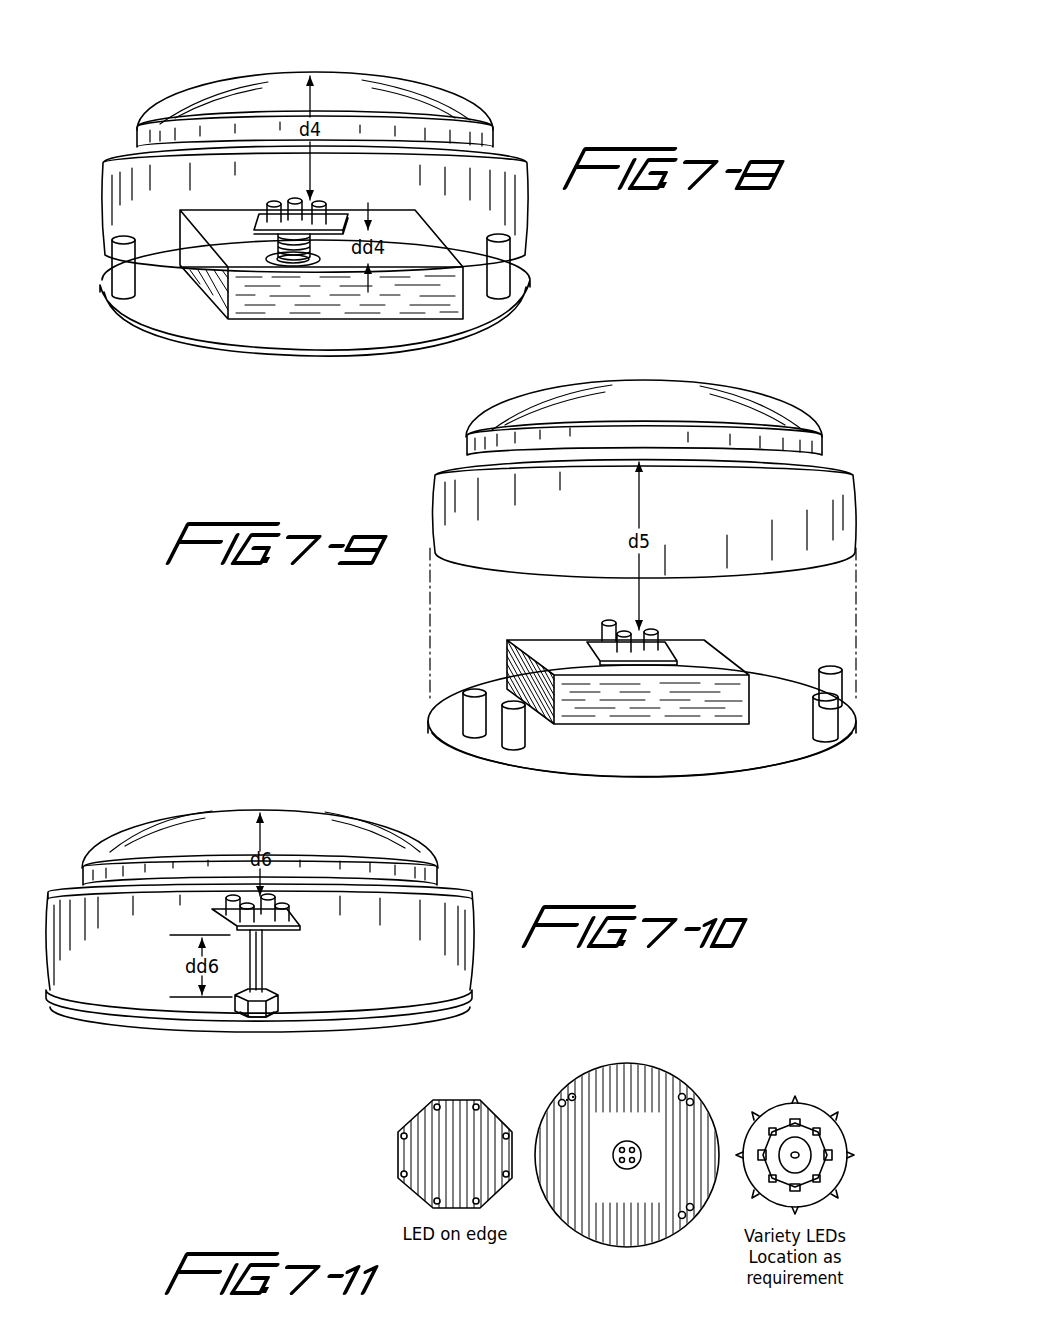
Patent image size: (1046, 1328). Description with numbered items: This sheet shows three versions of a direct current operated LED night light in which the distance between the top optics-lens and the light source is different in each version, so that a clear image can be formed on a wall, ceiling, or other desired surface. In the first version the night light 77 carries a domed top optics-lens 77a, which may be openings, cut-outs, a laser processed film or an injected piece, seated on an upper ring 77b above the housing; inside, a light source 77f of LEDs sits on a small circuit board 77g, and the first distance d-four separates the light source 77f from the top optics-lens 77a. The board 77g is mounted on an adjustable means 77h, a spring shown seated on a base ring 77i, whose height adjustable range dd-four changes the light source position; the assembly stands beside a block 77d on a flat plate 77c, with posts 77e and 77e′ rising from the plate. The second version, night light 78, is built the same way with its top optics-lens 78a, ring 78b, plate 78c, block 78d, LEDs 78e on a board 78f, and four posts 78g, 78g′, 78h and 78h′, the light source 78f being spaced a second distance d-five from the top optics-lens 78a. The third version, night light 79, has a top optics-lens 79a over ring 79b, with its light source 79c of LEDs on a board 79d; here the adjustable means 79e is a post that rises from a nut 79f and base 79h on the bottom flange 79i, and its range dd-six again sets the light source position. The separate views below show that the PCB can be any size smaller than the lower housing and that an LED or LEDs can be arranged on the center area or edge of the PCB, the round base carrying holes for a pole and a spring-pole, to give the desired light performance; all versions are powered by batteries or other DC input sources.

In FIG. 7-8, the night light 77 is at (154, 132).
In FIG. 7-8, the top optics-lens 77a is at (337, 78).
In FIG. 7-8, the lens ring 77b is at (512, 160).
In FIG. 7-8, the base plate 77c is at (507, 323).
In FIG. 7-8, the battery block 77d is at (247, 307).
In FIG. 7-8, the pole 77e is at (512, 271).
In FIG. 7-8, the pole 77e′ is at (118, 288).
In FIG. 7-8, the light source 77f is at (320, 205).
In FIG. 7-8, the PCB 77g is at (268, 218).
In FIG. 7-8, the adjustable means 77h is at (272, 255).
In FIG. 7-8, the spring base 77i is at (272, 252).
In FIG. 7-9, the night light 78 is at (452, 518).
In FIG. 7-9, the top optics-lens 78a is at (690, 381).
In FIG. 7-9, the lens ring 78b is at (836, 463).
In FIG. 7-9, the base plate 78c is at (795, 763).
In FIG. 7-9, the battery block 78d is at (707, 659).
In FIG. 7-9, the LEDs 78e is at (604, 631).
In FIG. 7-9, the light source 78f is at (600, 654).
In FIG. 7-9, the pole 78g is at (470, 696).
In FIG. 7-9, the pole 78g′ is at (830, 676).
In FIG. 7-9, the pole 78h is at (517, 733).
In FIG. 7-9, the pole 78h′ is at (836, 738).
In FIG. 7-10, the night light 79 is at (84, 949).
In FIG. 7-10, the top optics-lens 79a is at (344, 819).
In FIG. 7-10, the lens ring 79b is at (86, 869).
In FIG. 7-10, the light source 79c is at (292, 911).
In FIG. 7-10, the PCB 79d is at (300, 930).
In FIG. 7-10, the adjustable means 79e is at (264, 948).
In FIG. 7-10, the nut 79f is at (276, 992).
In FIG. 7-10, the nut base 79h is at (277, 1006).
In FIG. 7-10, the base flange 79i is at (93, 1016).
In FIG. 7-11, the element PCB is at (422, 1119).
In FIG. 7-11, the element base is at (655, 1069).
In FIG. 7-11, the element pole is at (560, 1105).
In FIG. 7-11, the spring pole spring-pole is at (573, 1097).
In FIG. 7-11, the element LED is at (629, 1157).